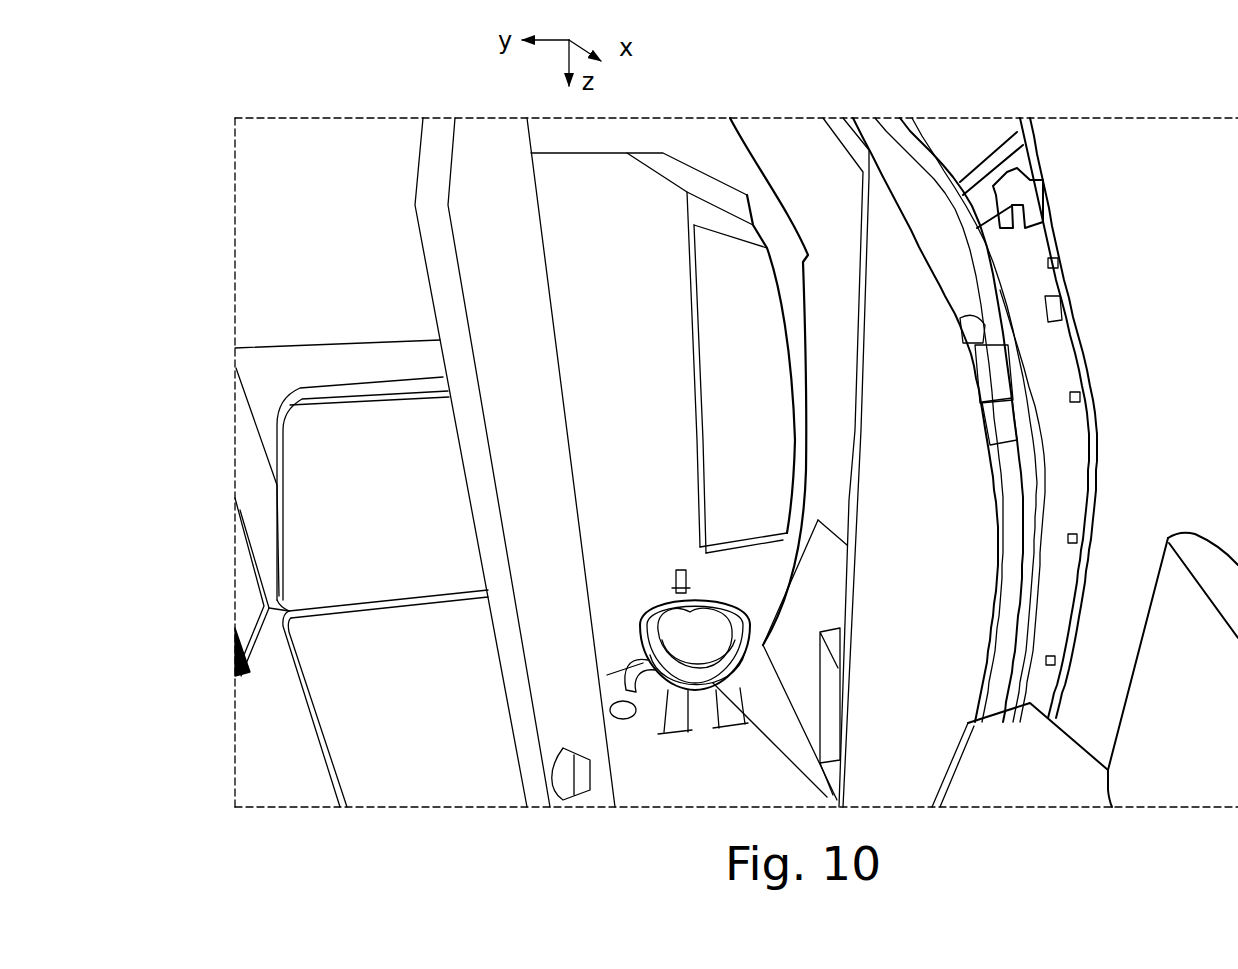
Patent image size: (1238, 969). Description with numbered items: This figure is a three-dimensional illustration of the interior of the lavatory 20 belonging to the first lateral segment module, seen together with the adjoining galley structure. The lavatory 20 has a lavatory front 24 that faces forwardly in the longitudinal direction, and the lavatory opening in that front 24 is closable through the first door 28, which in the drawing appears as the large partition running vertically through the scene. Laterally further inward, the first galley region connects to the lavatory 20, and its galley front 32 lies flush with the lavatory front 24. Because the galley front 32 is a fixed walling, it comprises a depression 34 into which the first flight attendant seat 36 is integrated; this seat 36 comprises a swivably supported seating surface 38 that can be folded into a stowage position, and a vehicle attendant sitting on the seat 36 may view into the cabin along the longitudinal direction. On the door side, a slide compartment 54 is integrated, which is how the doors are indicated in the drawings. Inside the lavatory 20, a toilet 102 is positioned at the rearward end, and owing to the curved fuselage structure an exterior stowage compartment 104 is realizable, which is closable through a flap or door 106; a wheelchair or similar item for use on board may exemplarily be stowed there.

The lavatory 20 is at (785, 108).
The lavatory front 24 is at (909, 595).
The first door 28 is at (517, 512).
The galley front 32 is at (316, 248).
The depression 34 is at (247, 366).
The first flight attendant seat 36 is at (247, 603).
The seating surface 38 is at (407, 726).
The slide compartment 54 is at (1053, 745).
The toilet 102 is at (660, 580).
The exterior stowage compartment 104 is at (670, 288).
The door 106 is at (722, 418).